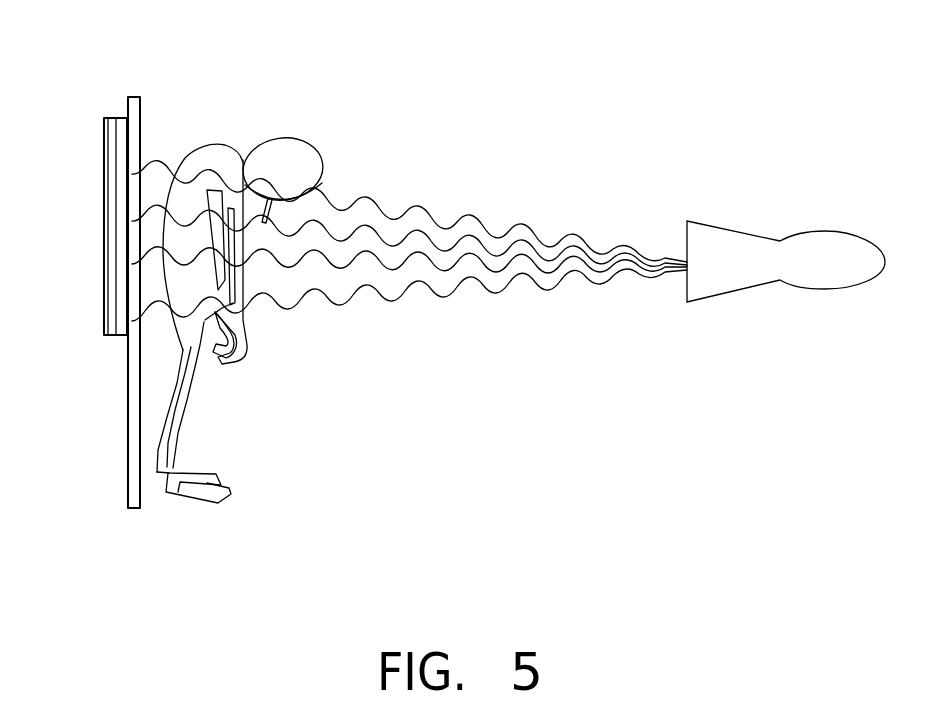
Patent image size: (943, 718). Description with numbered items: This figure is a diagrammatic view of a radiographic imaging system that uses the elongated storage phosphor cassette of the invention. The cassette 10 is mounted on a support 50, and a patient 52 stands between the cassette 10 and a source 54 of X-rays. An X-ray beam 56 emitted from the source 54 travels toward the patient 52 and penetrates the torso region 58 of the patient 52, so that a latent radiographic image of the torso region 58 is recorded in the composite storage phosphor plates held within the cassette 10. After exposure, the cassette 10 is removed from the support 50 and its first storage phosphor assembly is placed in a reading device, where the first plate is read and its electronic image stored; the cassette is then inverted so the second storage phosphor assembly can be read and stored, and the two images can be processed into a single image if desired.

The cassette 10 is at (92, 82).
The support 50 is at (130, 455).
The patient 52 is at (280, 140).
The source of X-rays 54 is at (824, 230).
The X-ray beam 56 is at (475, 214).
The torso region 58 is at (178, 97).